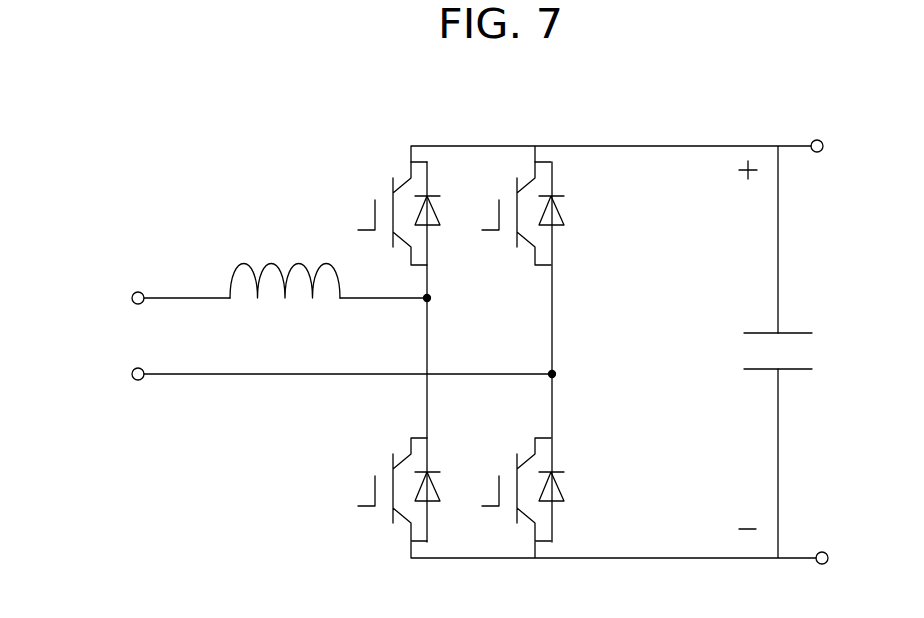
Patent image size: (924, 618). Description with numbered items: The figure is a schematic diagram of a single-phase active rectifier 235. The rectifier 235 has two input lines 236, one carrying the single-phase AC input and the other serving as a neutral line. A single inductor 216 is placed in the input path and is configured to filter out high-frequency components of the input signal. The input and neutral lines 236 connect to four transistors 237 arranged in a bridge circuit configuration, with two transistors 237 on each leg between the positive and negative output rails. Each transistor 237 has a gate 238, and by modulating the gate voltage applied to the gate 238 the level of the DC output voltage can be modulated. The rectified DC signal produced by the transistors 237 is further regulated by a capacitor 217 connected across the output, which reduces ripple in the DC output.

The inductor 216 is at (233, 265).
The capacitor 217 is at (815, 353).
The single-phase active rectifier 235 is at (372, 122).
The input lines 236 is at (112, 329).
The transistors 237 is at (385, 517).
The gate 238 is at (372, 222).